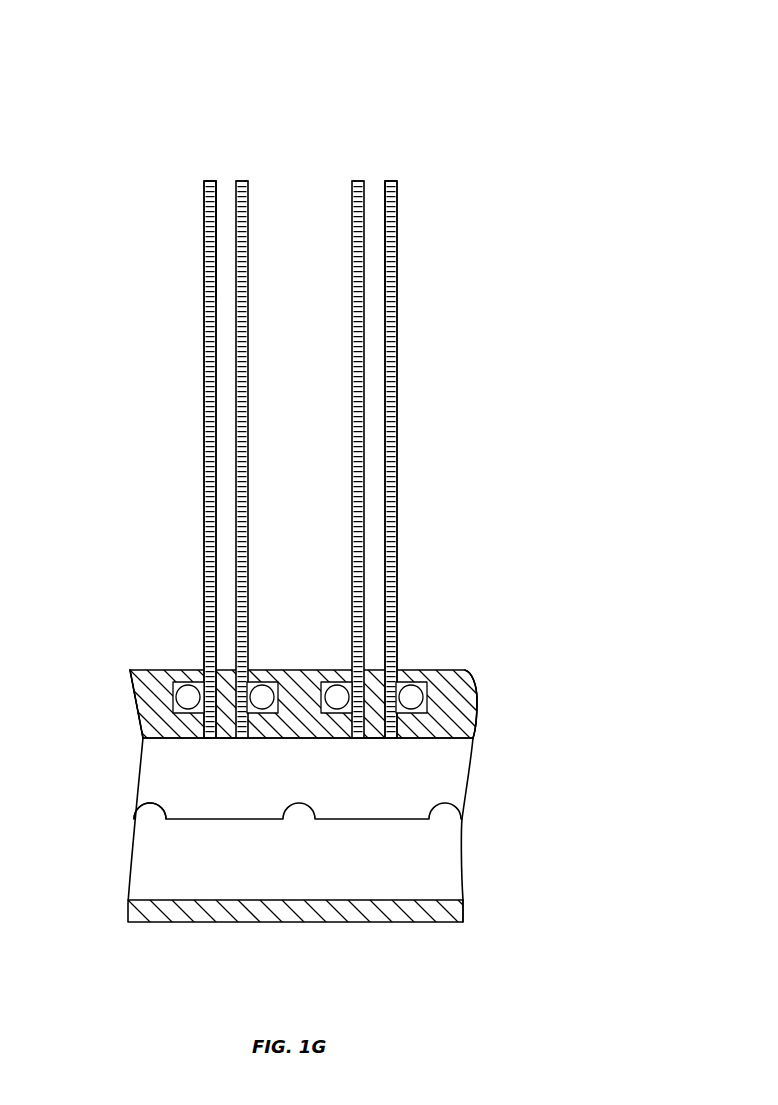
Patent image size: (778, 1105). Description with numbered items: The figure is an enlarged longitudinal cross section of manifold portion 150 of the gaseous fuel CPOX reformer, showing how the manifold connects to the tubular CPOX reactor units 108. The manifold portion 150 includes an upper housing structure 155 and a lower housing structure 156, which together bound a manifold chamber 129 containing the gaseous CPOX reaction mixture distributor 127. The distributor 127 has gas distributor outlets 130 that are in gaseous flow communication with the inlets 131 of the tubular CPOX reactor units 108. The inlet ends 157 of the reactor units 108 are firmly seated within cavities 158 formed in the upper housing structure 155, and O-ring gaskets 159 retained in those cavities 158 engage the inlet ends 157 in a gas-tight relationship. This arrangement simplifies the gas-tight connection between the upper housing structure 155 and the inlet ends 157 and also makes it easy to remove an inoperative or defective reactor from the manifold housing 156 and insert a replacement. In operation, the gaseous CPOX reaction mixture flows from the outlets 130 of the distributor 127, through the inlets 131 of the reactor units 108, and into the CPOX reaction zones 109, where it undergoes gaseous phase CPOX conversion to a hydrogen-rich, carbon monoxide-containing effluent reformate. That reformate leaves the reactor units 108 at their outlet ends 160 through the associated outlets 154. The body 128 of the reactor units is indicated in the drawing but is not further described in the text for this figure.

The manifold portion 150 is at (409, 67).
The outlet ends 160 is at (226, 163).
The outlets 154 is at (374, 195).
The CPOX reaction zones 109 is at (224, 390).
The tubular CPOX reactor units 108 is at (247, 520).
The inlet ends 157 is at (226, 713).
The O-ring gaskets 159 is at (183, 690).
The upper housing structure 155 is at (137, 690).
The gas distribution body 128 is at (139, 706).
The cavities 158 is at (205, 722).
The gaseous CPOX reaction mixture distributor 127 is at (146, 791).
The inlets 131 is at (227, 743).
The gas distributor outlets 130 is at (157, 808).
The manifold chamber 129 is at (156, 850).
The lower housing structure 156 is at (203, 922).